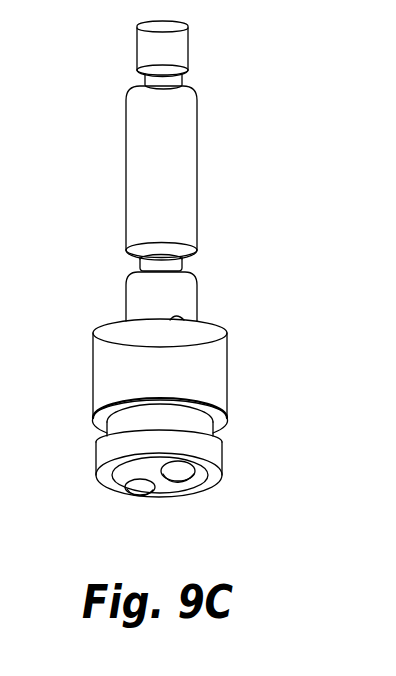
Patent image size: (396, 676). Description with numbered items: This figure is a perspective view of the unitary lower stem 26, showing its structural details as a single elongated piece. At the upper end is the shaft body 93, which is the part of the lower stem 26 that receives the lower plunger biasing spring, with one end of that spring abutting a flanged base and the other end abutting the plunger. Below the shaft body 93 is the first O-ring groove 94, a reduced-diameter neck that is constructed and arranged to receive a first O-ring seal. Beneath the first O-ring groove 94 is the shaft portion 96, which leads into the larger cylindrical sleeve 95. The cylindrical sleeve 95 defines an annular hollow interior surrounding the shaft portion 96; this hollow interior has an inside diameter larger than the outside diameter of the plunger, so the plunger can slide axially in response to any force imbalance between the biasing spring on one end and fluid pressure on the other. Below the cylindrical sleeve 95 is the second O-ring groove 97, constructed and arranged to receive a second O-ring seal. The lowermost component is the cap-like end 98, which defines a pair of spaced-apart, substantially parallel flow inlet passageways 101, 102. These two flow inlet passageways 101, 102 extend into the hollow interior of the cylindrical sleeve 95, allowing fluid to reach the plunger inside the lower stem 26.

The lower stem 26 is at (240, 149).
The shaft body 93 is at (135, 120).
The first O-ring groove 94 is at (137, 264).
The cylindrical sleeve 95 is at (103, 368).
The shaft portion 96 is at (190, 300).
The second O-ring groove 97 is at (100, 434).
The cap-like end 98 is at (155, 500).
The flow inlet passageway 101 is at (200, 478).
The flow inlet passageway 102 is at (135, 497).